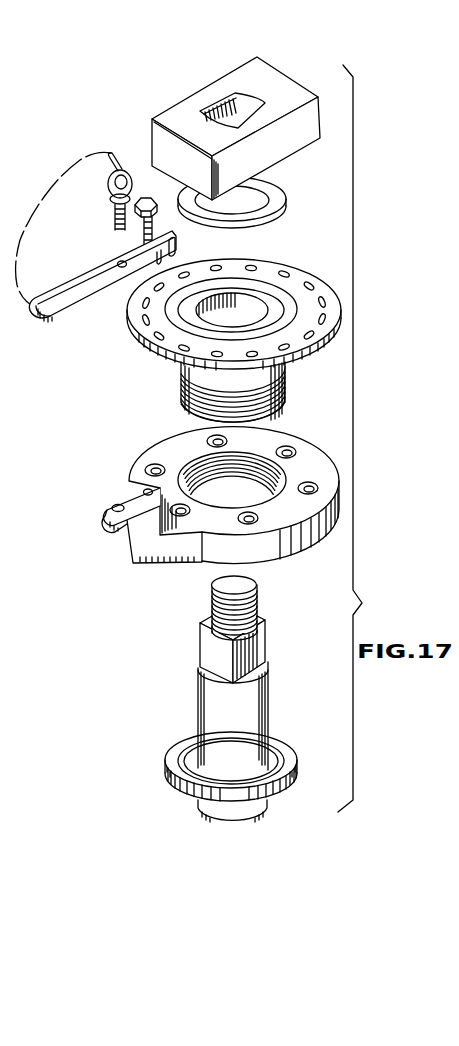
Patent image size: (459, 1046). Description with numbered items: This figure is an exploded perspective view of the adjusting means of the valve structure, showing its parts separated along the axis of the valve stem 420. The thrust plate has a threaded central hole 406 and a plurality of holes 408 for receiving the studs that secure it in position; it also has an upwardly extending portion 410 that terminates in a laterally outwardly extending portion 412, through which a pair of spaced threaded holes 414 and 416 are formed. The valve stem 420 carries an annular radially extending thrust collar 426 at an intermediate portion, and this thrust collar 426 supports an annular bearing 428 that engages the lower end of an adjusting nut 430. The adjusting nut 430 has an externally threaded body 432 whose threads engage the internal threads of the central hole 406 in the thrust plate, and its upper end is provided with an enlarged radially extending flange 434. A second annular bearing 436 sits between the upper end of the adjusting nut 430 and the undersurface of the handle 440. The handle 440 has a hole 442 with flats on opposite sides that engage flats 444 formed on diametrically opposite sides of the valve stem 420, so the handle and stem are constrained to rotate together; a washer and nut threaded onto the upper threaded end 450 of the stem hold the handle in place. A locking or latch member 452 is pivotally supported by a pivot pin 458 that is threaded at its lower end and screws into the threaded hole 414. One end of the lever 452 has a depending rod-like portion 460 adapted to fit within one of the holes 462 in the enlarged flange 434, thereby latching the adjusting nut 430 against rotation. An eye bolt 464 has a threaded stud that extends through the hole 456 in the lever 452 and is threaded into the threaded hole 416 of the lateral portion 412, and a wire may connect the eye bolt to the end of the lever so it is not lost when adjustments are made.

The central hole 406 is at (247, 463).
The holes 408 is at (152, 466).
The upwardly extending portion 410 is at (194, 488).
The laterally outwardly extending portion 412 is at (105, 486).
The threaded hole 414 is at (146, 489).
The threaded hole 416 is at (110, 512).
The valve stem 420 is at (205, 816).
The thrust collar 426 is at (174, 776).
The annular bearing 428 is at (275, 745).
The adjusting nut 430 is at (288, 378).
The threaded hub 432 is at (238, 389).
The flange 434 is at (210, 308).
The second annular bearing 436 is at (272, 194).
The handle 440 is at (246, 121).
The hole 442 is at (238, 98).
The flats 444 is at (262, 640).
The upper threaded end 450 is at (211, 606).
The locking or latch member 452 is at (46, 312).
The hole 456 is at (133, 292).
The pivot pin 458 is at (143, 226).
The depending rod-like portion 460 is at (179, 256).
The holes 462 is at (292, 275).
The eye bolt 464 is at (108, 204).